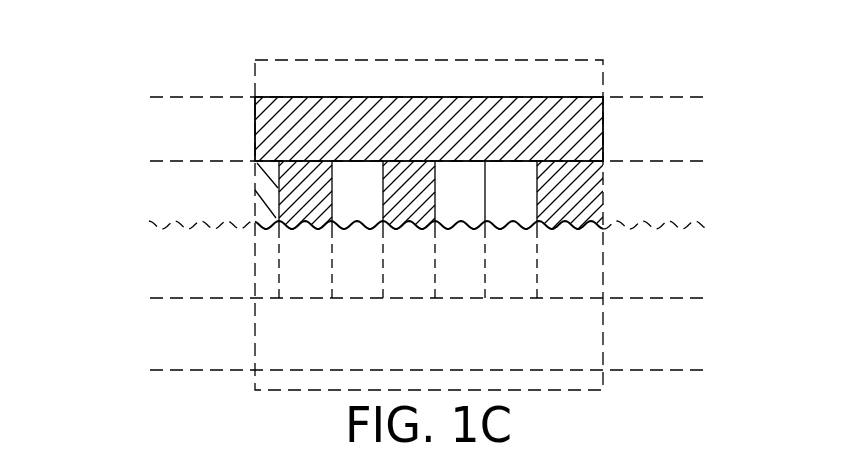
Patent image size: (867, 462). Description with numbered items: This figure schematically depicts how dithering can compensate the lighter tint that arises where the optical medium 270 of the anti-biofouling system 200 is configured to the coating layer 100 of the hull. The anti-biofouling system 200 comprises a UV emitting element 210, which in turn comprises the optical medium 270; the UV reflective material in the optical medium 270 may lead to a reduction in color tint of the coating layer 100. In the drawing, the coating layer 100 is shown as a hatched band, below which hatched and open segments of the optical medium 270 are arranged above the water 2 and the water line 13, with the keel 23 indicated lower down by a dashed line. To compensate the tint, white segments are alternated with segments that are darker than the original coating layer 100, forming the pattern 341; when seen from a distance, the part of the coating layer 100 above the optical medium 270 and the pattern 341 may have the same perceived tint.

The pattern 341 is at (133, 189).
The coating layer 100 is at (559, 113).
The anti-biofouling system 200 is at (434, 117).
The UV emitting element 210 is at (460, 183).
The optical medium 270 is at (257, 173).
The water line 13 is at (273, 232).
The water 2 is at (585, 268).
The keel 23 is at (272, 368).